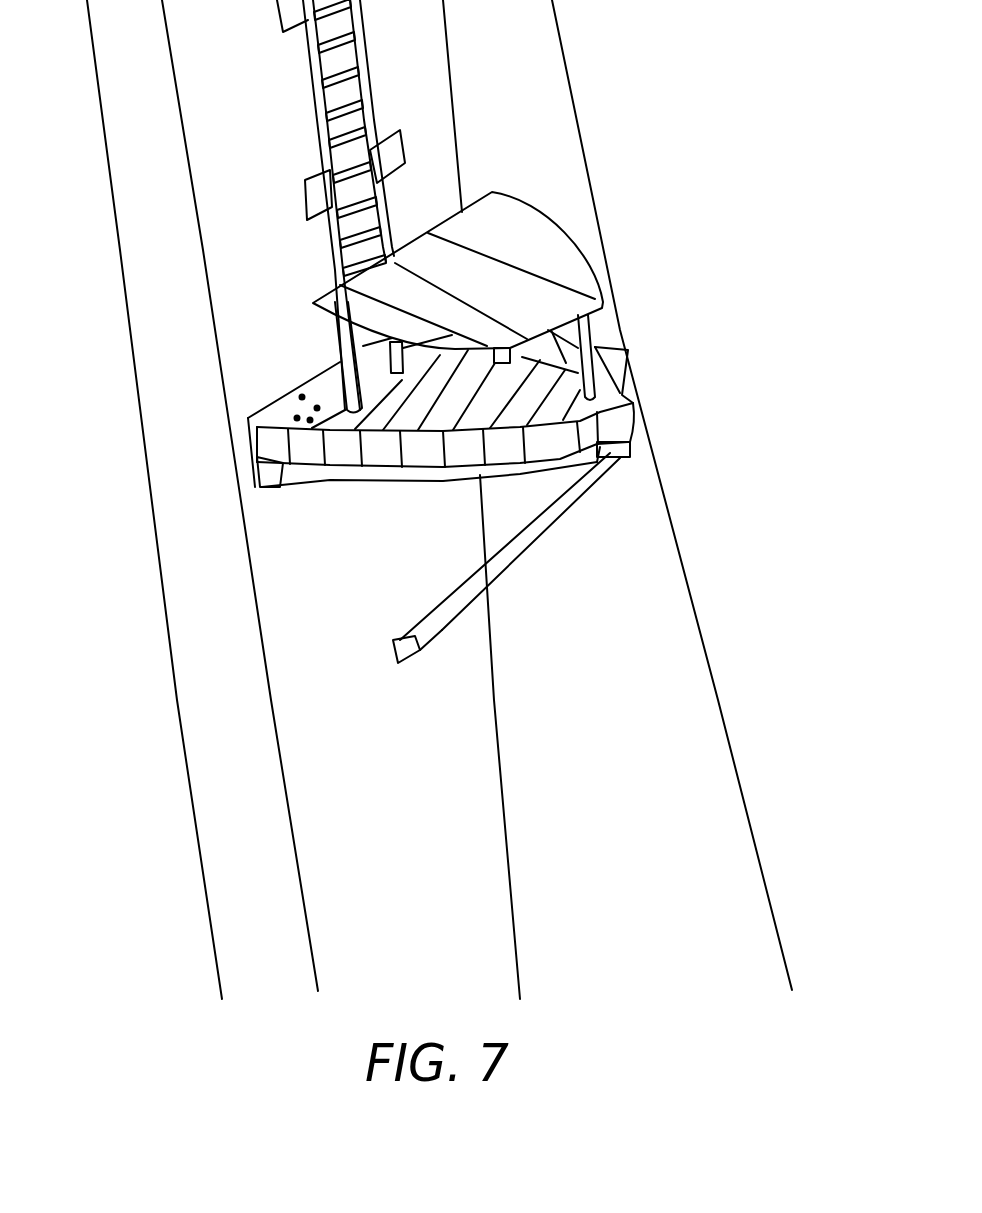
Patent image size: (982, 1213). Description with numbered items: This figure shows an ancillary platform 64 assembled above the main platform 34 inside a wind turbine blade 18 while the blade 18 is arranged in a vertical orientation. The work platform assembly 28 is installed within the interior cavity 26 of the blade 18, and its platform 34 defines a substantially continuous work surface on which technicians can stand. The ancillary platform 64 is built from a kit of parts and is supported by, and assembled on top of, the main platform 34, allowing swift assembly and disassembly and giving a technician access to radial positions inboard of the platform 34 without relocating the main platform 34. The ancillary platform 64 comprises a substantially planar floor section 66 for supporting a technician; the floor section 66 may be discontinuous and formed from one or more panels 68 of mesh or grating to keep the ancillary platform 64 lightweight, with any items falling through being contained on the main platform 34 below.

The wind turbine blade 18 is at (690, 508).
The interior cavity 26 is at (617, 732).
The work platform assembly 28 is at (270, 380).
The platform 34 is at (418, 420).
The ancillary platform 64 is at (556, 190).
The floor section 66 is at (458, 253).
The panels 68 is at (313, 305).